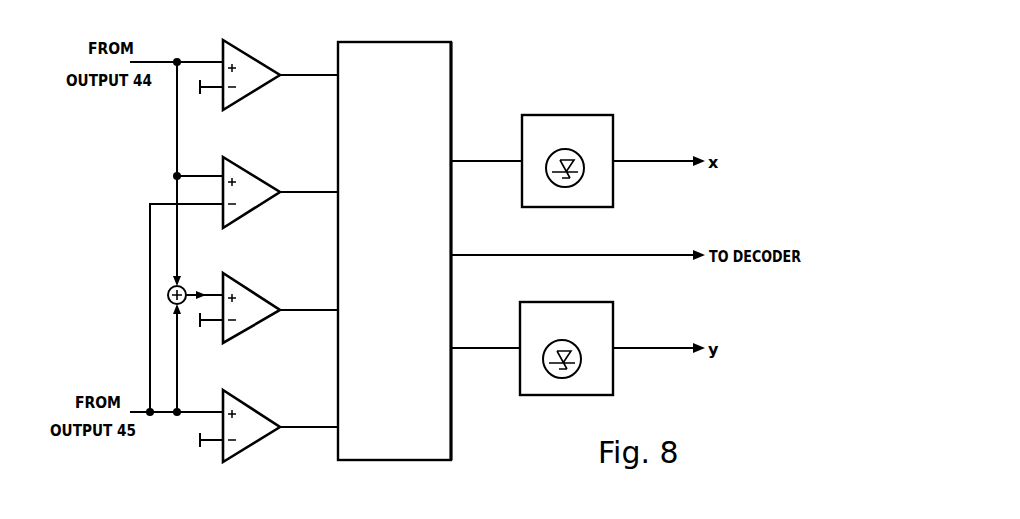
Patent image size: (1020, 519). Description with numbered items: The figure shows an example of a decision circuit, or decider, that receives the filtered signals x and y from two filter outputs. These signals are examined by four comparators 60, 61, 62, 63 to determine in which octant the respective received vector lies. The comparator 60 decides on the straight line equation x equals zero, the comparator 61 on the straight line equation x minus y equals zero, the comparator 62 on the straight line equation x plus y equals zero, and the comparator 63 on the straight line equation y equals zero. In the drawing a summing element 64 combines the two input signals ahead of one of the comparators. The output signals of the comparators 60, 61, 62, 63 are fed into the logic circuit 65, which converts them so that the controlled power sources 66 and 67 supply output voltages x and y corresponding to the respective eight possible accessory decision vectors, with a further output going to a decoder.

The comparator 60 is at (250, 68).
The comparator 61 is at (250, 185).
The comparator 62 is at (254, 302).
The comparator 63 is at (254, 416).
The summing circuit 64 is at (189, 277).
The logic circuit 65 is at (440, 70).
The controlled power source 66 is at (570, 132).
The controlled power source 67 is at (585, 322).